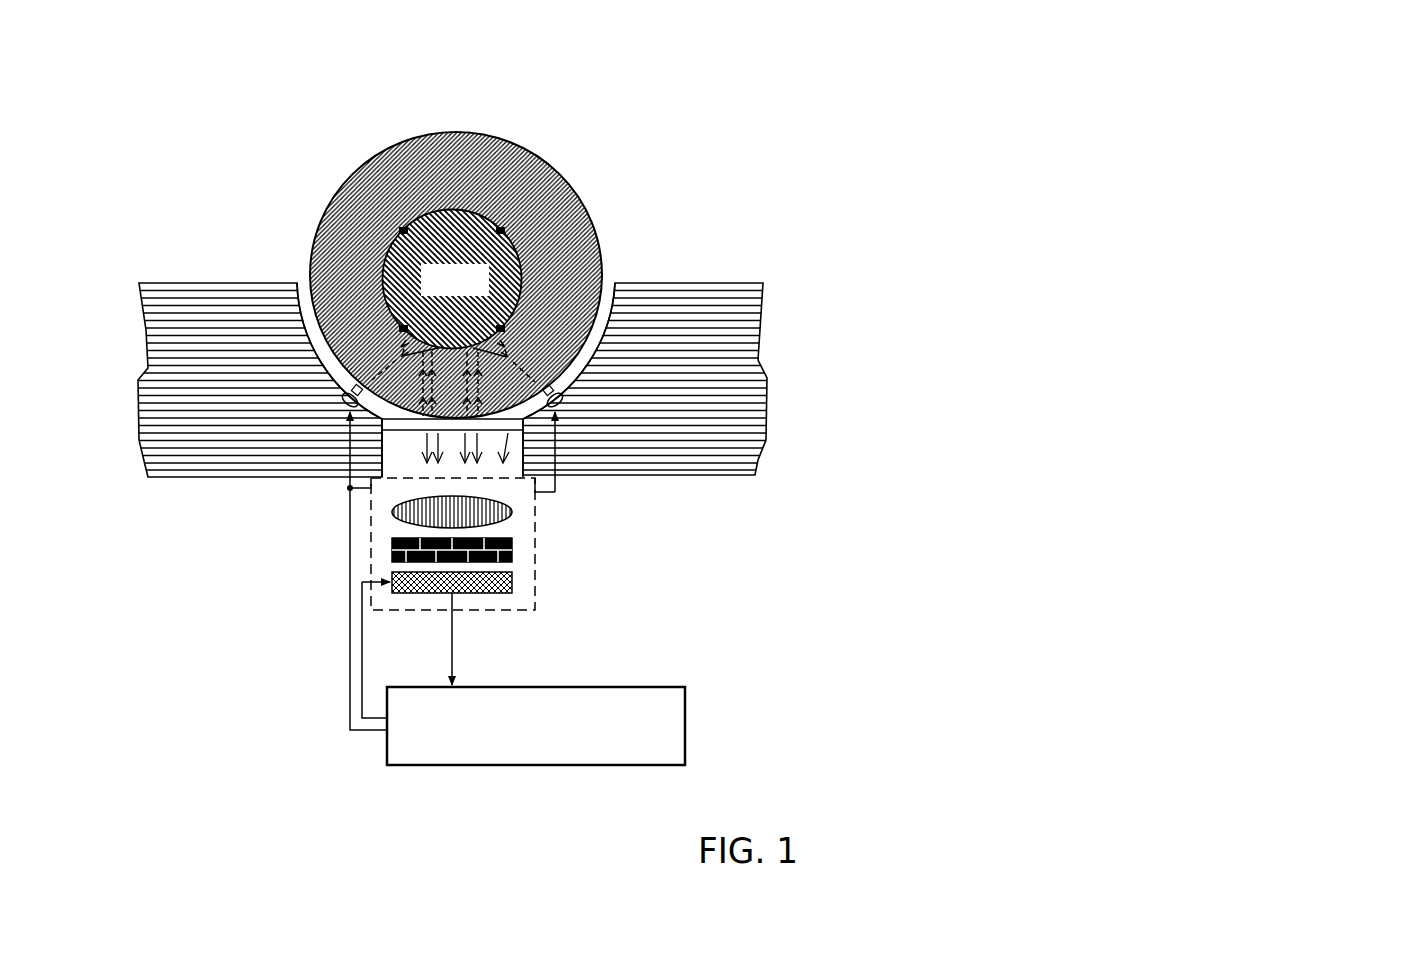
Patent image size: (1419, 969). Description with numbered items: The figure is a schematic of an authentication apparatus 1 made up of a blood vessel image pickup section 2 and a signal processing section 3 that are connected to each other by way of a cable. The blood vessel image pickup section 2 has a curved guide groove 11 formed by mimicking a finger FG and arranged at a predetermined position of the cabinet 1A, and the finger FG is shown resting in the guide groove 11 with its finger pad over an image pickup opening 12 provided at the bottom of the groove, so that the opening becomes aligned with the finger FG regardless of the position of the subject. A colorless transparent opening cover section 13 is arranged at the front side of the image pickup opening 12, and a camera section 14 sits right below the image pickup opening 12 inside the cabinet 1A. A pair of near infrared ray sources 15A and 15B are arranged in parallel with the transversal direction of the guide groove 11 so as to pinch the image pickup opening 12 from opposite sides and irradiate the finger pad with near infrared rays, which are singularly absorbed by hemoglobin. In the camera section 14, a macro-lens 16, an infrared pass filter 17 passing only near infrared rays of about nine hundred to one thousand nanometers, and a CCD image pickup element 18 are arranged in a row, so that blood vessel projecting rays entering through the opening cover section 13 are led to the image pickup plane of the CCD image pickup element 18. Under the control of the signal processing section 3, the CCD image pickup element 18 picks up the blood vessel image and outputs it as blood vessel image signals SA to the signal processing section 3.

The authentication apparatus 1 is at (836, 103).
The cabinet 1A is at (707, 282).
The blood vessel image pickup section 2 is at (1132, 270).
The signal processing section 3 is at (685, 725).
The guide groove 11 is at (302, 302).
The image pickup opening 12 is at (598, 330).
The opening cover section 13 is at (517, 425).
The camera section 14 is at (726, 598).
The near infrared ray source 15A is at (346, 410).
The near infrared ray source 15B is at (558, 401).
The macro-lens 16 is at (510, 515).
The infrared pass filter 17 is at (512, 548).
The CCD image pickup element 18 is at (512, 583).
The finger FG is at (486, 134).
The blood vessel image signals SA is at (453, 663).